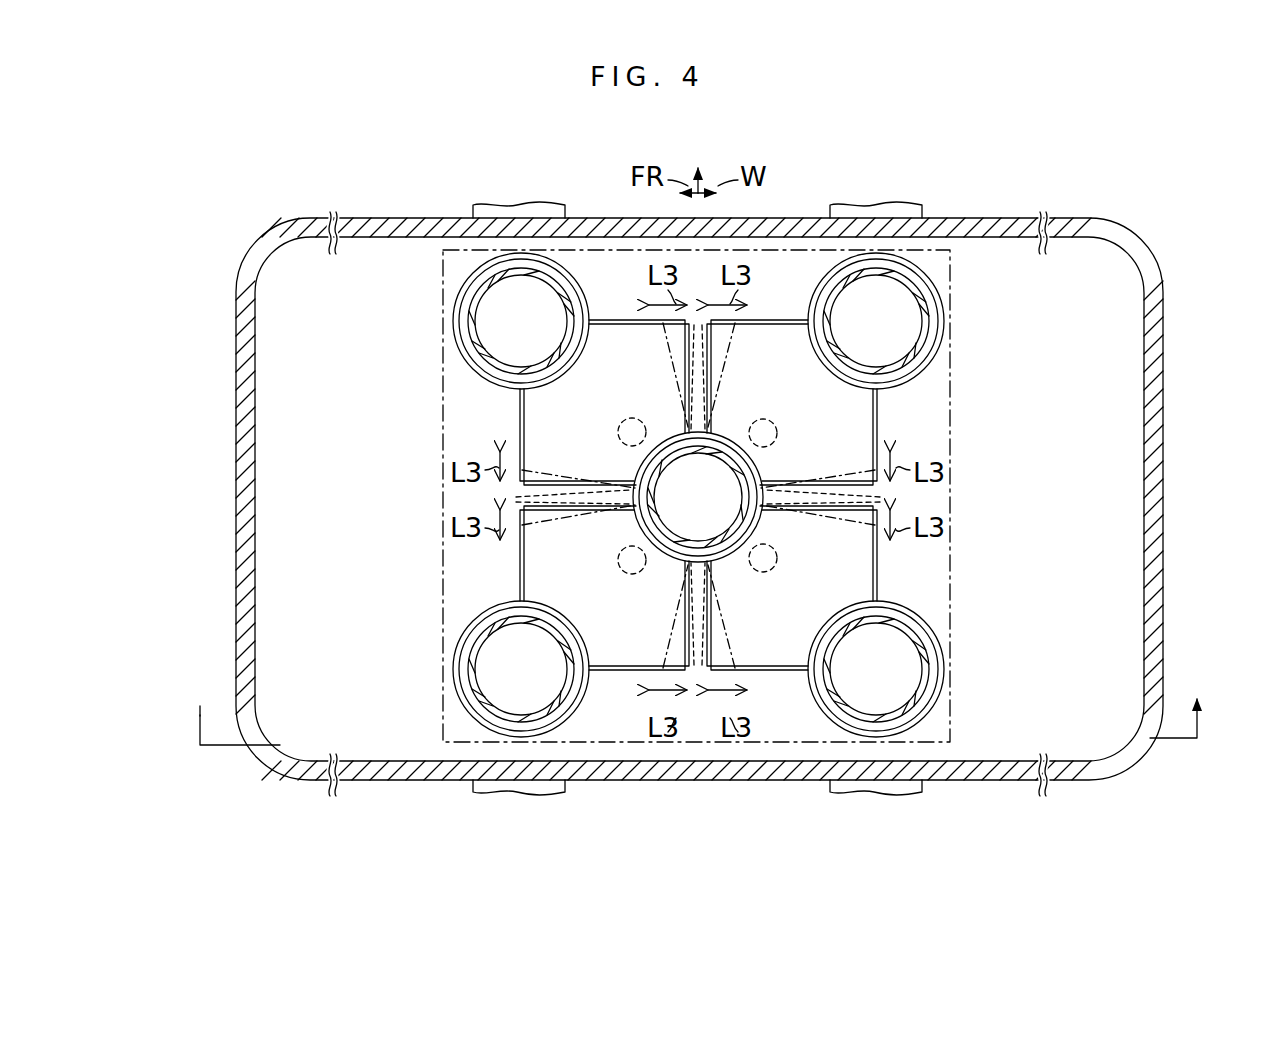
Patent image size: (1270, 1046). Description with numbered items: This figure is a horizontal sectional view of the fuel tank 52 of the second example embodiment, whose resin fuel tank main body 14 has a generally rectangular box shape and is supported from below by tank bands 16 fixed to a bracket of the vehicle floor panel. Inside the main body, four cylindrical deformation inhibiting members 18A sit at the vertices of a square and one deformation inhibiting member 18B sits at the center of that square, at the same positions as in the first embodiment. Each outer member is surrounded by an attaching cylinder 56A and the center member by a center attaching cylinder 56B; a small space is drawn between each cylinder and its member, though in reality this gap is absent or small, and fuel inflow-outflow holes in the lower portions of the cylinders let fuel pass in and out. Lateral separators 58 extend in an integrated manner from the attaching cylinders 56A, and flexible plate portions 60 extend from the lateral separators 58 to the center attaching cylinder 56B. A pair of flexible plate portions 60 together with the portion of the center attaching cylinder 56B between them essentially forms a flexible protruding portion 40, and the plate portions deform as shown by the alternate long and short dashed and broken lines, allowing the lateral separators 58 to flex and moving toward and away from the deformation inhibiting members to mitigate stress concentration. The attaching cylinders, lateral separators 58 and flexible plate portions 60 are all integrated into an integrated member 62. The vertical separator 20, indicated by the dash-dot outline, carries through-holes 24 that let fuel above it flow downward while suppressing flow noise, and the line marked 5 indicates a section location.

The fuel tank 52 is at (1146, 199).
The fuel tank main body 14 is at (264, 762).
The tank band 16 is at (945, 807).
The deformation inhibiting member 18A is at (461, 291).
The deformation inhibiting member 18B is at (690, 435).
The attaching cylinder 56A is at (454, 323).
The center attaching cylinder 56B is at (665, 440).
The lateral separator 58 is at (634, 321).
The flexible plate portion 60 is at (668, 372).
The flexible protruding portion 40 is at (684, 357).
The through-hole 24 is at (620, 428).
The vertical separator 20 is at (952, 420).
The integrated member 62 is at (462, 438).
The section line 5 is at (200, 745).